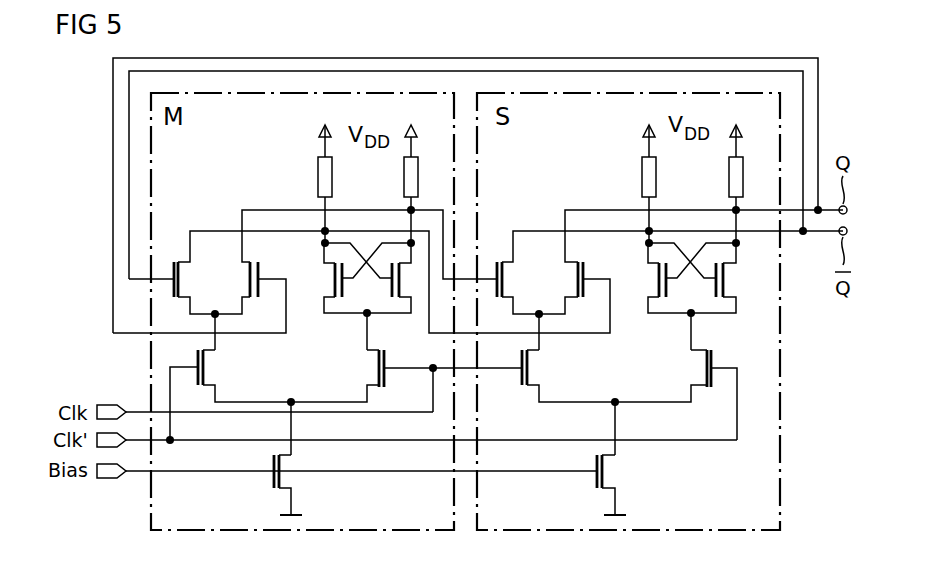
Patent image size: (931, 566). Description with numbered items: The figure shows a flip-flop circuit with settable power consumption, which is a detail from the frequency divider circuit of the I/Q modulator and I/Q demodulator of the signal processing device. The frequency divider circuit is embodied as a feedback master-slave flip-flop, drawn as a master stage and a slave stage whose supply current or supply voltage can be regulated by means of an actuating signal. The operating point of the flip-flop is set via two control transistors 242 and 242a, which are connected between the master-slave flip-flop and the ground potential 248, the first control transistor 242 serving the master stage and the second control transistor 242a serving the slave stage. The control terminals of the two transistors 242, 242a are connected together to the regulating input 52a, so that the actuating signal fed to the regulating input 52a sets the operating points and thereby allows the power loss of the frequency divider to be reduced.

The regulating input 52a is at (104, 479).
The control transistor 242 is at (285, 478).
The control transistor 242a is at (608, 469).
The ground potential 248 is at (281, 515).